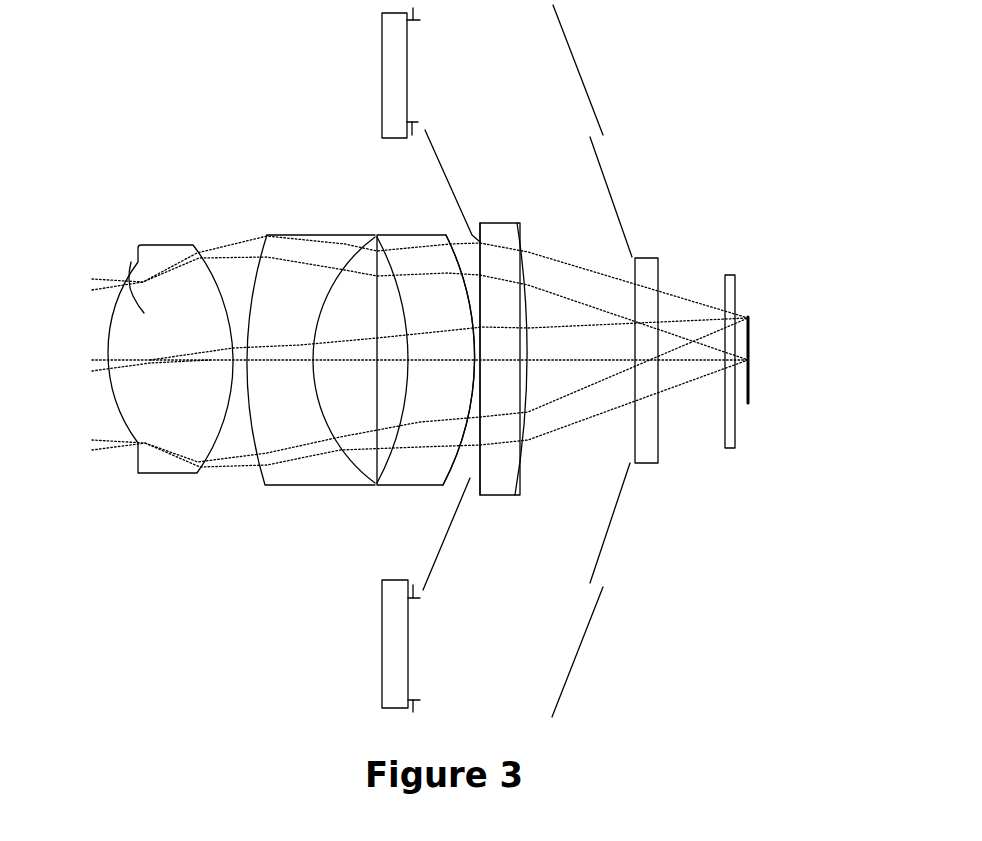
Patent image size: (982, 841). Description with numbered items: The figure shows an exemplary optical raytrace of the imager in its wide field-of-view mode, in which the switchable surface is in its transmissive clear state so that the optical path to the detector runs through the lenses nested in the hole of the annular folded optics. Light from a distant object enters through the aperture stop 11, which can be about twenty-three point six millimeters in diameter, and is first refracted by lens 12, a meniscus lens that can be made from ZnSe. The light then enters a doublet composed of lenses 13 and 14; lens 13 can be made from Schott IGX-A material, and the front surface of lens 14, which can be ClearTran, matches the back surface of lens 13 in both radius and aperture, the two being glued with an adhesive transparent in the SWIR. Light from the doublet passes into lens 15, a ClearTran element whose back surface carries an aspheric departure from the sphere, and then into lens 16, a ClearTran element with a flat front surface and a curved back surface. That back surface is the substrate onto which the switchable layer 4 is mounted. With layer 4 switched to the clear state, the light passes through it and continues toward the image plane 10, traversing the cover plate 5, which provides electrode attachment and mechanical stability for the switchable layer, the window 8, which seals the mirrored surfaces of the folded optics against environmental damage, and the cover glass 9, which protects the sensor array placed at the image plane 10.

The switchable layer 4 is at (520, 447).
The cover plate 5 is at (520, 292).
The window 8 is at (653, 252).
The cover glass 9 is at (735, 450).
The image plane 10 is at (748, 310).
The aperture stop 11 is at (131, 262).
The lens 12 is at (162, 245).
The lens 13 is at (272, 236).
The lens 14 is at (350, 277).
The lens 15 is at (400, 488).
The lens 16 is at (480, 290).